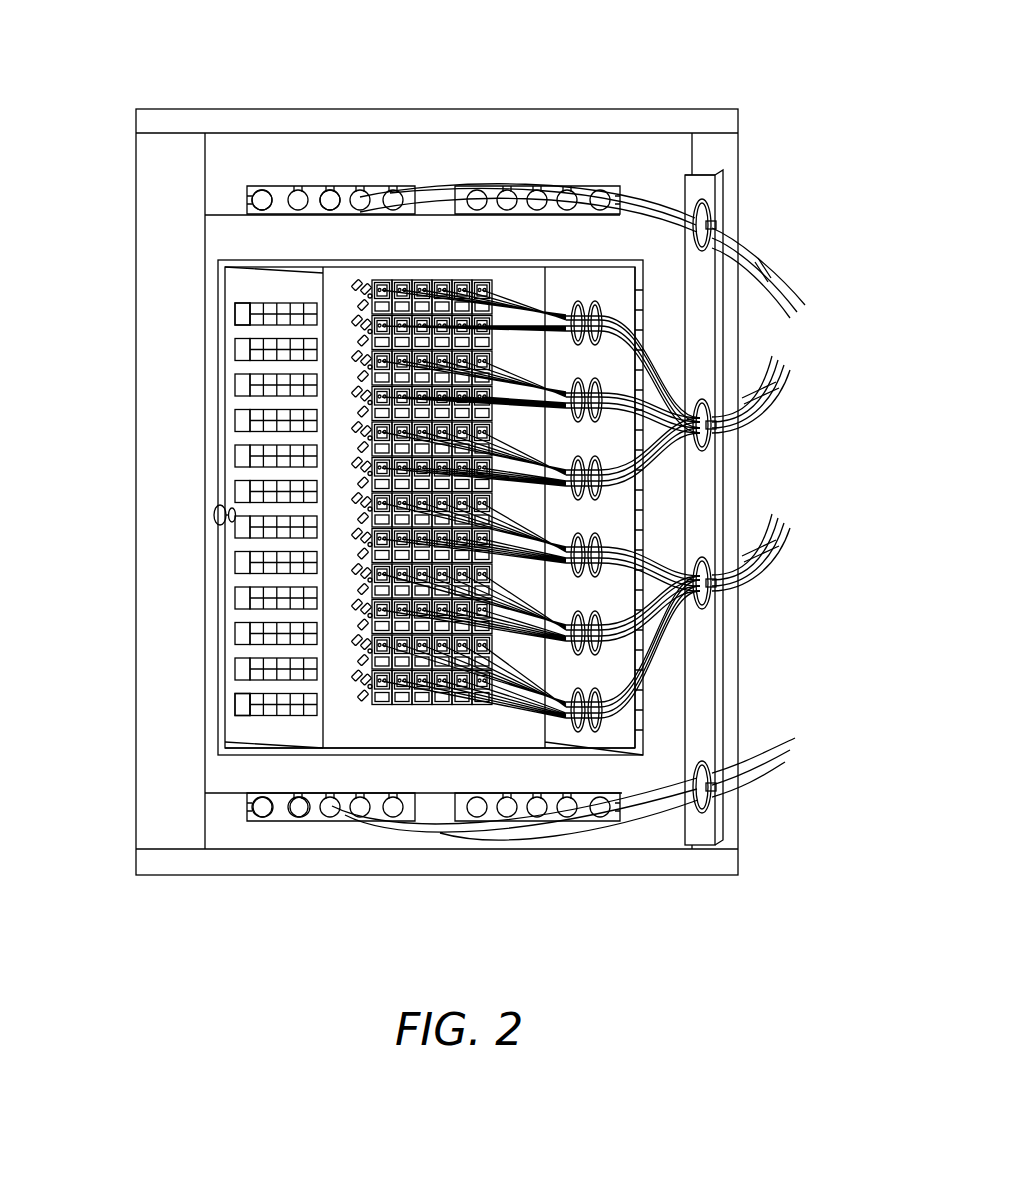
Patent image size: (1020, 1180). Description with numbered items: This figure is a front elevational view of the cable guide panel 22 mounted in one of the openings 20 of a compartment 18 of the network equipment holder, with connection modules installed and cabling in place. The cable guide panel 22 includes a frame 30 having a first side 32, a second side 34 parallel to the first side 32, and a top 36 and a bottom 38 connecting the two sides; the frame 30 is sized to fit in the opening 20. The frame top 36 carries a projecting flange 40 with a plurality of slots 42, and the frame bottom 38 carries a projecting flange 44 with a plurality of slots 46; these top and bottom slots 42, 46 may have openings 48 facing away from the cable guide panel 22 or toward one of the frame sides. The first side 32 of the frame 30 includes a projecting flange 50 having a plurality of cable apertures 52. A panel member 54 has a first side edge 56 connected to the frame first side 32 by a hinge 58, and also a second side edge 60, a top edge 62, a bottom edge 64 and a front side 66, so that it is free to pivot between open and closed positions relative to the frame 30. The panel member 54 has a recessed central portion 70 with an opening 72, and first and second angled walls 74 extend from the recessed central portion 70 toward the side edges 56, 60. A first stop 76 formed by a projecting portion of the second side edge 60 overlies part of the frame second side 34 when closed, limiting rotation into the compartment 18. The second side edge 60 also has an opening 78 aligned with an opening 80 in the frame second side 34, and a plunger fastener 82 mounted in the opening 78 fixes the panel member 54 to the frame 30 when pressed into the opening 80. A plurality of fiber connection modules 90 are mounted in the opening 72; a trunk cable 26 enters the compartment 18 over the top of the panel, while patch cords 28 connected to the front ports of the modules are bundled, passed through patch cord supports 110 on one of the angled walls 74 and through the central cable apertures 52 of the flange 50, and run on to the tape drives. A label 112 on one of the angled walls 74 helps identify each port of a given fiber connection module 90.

The compartment 18 is at (230, 842).
The opening 20 is at (248, 852).
The cable guide panel 22 is at (216, 768).
The trunk cable 26 is at (778, 750).
The patch cord 28 is at (745, 577).
The frame 30 is at (658, 722).
The first side 32 is at (670, 743).
The second side 34 is at (218, 320).
The top 36 is at (394, 237).
The bottom 38 is at (423, 770).
The projecting flange 40 is at (283, 187).
The slots 42 is at (335, 199).
The projecting flange 44 is at (283, 815).
The slots 46 is at (300, 822).
The openings 48 is at (299, 188).
The projecting flange 50 is at (727, 700).
The cable apertures 52 is at (693, 815).
The panel member 54 is at (218, 695).
The first side edge 56 is at (641, 312).
The hinge 58 is at (645, 328).
The second side edge 60 is at (218, 370).
The top edge 62 is at (270, 258).
The bottom edge 64 is at (597, 757).
The front side 66 is at (347, 723).
The recessed central portion 70 is at (334, 577).
The opening 72 is at (365, 606).
The angled walls 74 is at (610, 524).
The first stop 76 is at (218, 338).
The opening 78 is at (218, 523).
The opening 80 is at (213, 518).
The plunger fastener 82 is at (220, 508).
The fiber connection modules 90 is at (355, 303).
The patch cord supports 110 is at (583, 300).
The label 112 is at (257, 713).